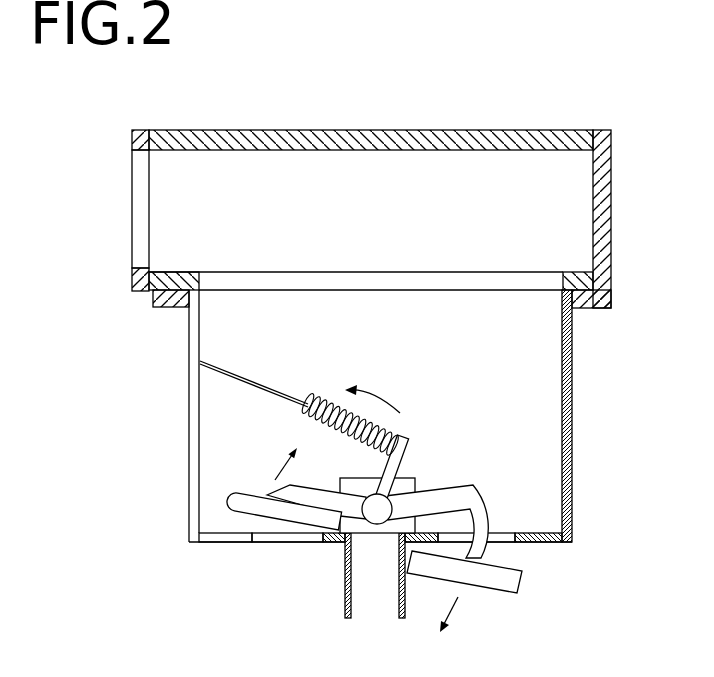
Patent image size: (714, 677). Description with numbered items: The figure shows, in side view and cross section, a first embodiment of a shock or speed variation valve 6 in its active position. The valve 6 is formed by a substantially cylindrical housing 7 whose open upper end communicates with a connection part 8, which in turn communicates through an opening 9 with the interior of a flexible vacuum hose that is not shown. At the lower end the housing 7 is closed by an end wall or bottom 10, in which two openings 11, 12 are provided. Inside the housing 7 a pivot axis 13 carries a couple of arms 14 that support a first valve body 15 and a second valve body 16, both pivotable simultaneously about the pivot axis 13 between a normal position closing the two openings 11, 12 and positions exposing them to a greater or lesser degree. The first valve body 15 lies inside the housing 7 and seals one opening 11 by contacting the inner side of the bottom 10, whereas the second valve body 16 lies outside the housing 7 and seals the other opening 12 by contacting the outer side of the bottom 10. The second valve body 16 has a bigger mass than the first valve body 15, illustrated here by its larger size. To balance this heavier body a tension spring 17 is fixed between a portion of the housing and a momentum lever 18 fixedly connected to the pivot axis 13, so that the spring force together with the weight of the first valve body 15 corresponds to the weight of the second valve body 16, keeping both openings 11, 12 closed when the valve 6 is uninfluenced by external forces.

The shock or speed variation valve 6 is at (577, 431).
The cylindrical housing 7 is at (193, 497).
The connection part 8 is at (603, 212).
The opening 9 is at (140, 248).
The bottom 10 is at (233, 538).
The opening 11 is at (298, 538).
The opening 12 is at (505, 542).
The pivot axis 13 is at (377, 510).
The arms 14 is at (460, 495).
The first valve body 15 is at (243, 480).
The second valve body 16 is at (503, 583).
The tension spring 17 is at (387, 432).
The momentum lever 18 is at (322, 405).